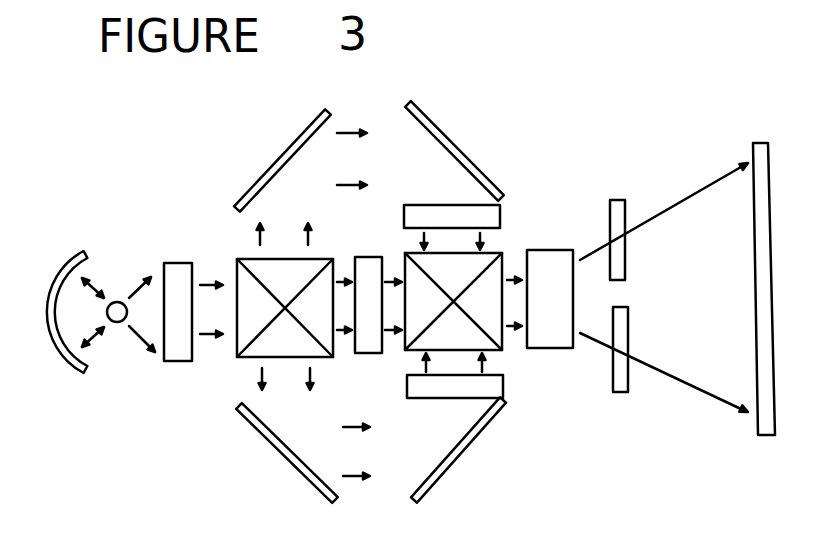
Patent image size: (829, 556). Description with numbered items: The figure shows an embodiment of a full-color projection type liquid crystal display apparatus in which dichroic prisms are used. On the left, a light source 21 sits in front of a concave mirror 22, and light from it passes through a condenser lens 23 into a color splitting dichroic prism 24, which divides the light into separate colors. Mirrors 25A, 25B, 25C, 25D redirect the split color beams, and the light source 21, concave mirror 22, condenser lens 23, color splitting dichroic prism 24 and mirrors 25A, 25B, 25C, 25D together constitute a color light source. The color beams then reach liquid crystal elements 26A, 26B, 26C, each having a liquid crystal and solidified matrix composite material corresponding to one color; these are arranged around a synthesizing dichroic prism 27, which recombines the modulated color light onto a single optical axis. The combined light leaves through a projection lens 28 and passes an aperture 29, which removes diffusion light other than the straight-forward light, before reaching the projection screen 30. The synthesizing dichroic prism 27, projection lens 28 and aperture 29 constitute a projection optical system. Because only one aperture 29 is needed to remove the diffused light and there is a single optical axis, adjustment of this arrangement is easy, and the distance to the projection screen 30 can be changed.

The light source 21 is at (115, 302).
The concave mirror 22 is at (72, 258).
The condenser lens 23 is at (168, 361).
The color splitting dichroic prism 24 is at (237, 357).
The mirror 25A is at (270, 168).
The mirror 25B is at (462, 150).
The mirror 25C is at (262, 440).
The mirror 25D is at (462, 458).
The liquid crystal element 26A is at (503, 213).
The liquid crystal element 26B is at (367, 272).
The liquid crystal element 26C is at (505, 393).
The synthesizing dichroic prism 27 is at (500, 350).
The projection lens 28 is at (553, 280).
The aperture 29 is at (612, 202).
The projection screen 30 is at (758, 428).